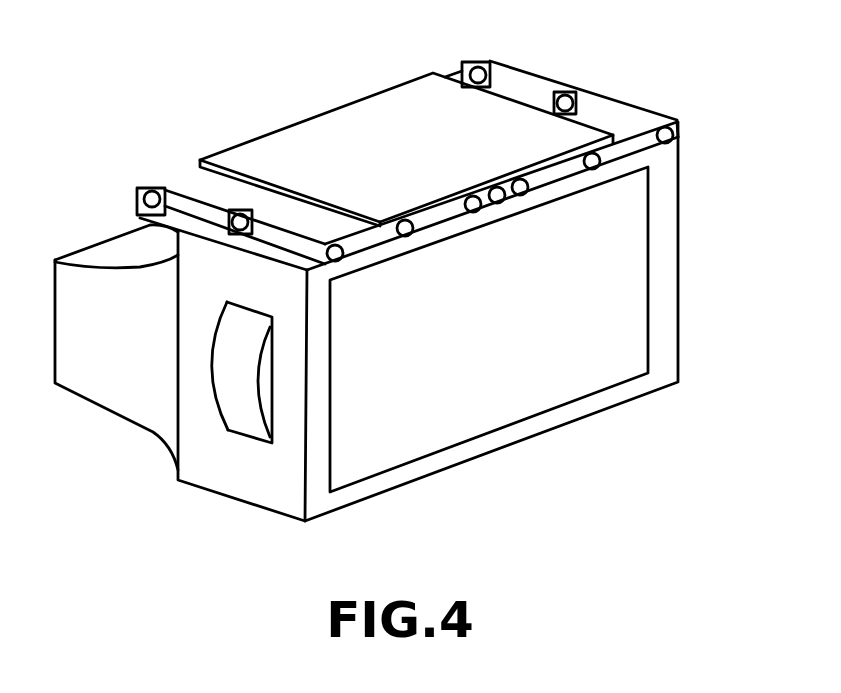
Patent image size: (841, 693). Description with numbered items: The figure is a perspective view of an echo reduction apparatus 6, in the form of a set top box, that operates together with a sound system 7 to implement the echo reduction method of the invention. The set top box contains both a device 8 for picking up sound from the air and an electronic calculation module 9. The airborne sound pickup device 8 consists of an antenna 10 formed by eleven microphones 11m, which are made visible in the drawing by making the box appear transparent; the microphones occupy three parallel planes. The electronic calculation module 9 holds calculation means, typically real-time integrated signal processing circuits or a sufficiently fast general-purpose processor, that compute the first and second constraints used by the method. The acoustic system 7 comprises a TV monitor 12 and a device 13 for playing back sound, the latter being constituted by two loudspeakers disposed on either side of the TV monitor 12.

The echo reduction apparatus 6 is at (527, 89).
The sound system 7 is at (517, 455).
The device for picking up sound from the air 8 is at (695, 120).
The electronic calculation module 9 is at (310, 138).
The antenna 10 is at (633, 143).
The microphones 11m is at (150, 193).
The TV monitor 12 is at (637, 310).
The device for playing back sound 13 is at (233, 385).